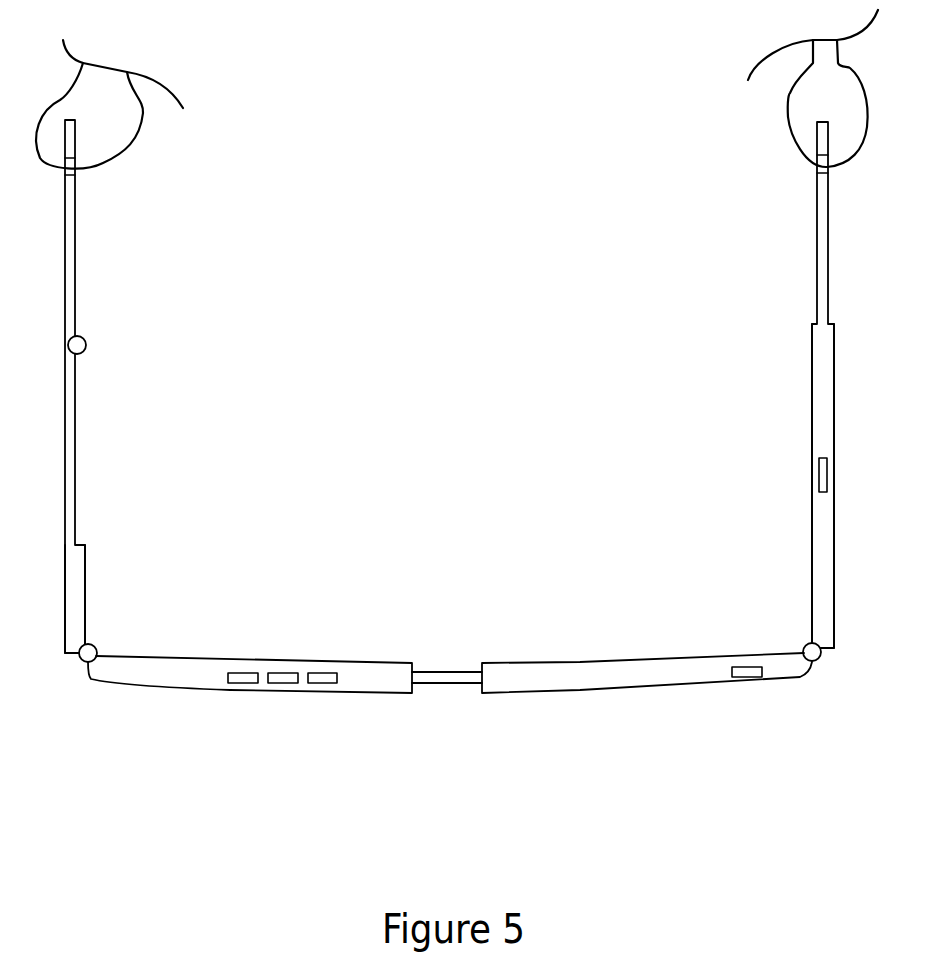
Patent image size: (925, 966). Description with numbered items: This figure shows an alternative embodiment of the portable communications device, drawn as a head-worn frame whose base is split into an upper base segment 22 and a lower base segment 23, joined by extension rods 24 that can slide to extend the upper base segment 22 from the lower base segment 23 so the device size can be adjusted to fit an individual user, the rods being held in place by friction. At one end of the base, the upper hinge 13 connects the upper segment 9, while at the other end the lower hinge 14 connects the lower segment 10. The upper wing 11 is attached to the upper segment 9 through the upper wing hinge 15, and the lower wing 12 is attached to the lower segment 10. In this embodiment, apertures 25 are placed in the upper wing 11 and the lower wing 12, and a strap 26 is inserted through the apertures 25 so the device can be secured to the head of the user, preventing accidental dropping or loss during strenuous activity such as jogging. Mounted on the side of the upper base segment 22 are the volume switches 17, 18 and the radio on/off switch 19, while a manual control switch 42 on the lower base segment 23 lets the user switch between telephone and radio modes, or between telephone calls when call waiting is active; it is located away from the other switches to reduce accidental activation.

The upper segment 9 is at (80, 578).
The lower segment 10 is at (825, 617).
The upper wing 11 is at (68, 272).
The lower wing 12 is at (828, 220).
The upper hinge 13 is at (80, 658).
The lower hinge 14 is at (822, 653).
The upper wing hinge 15 is at (85, 350).
The volume switch 17 is at (228, 683).
The volume switch 18 is at (268, 683).
The radio on/off switch 19 is at (308, 683).
The upper base segment 22 is at (140, 667).
The lower base segment 23 is at (635, 678).
The extension rods 24 is at (457, 677).
The apertures 25 is at (75, 172).
The strap 26 is at (137, 133).
The manual control switch 42 is at (757, 680).